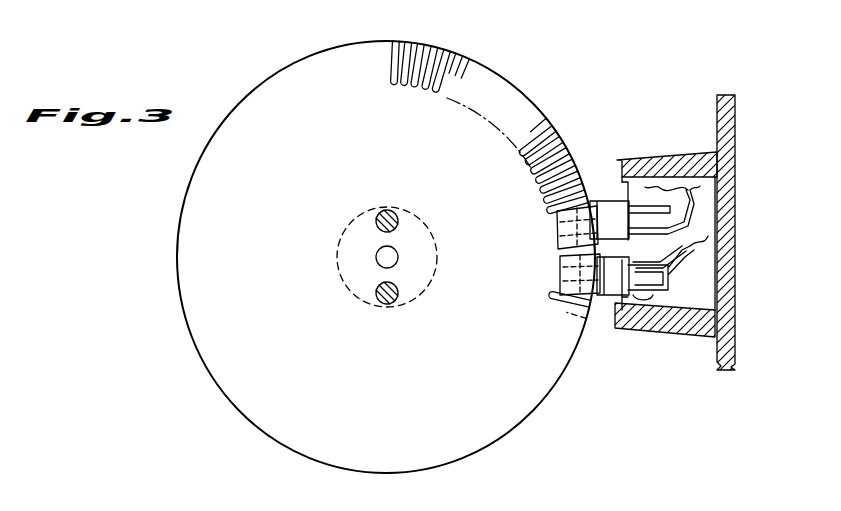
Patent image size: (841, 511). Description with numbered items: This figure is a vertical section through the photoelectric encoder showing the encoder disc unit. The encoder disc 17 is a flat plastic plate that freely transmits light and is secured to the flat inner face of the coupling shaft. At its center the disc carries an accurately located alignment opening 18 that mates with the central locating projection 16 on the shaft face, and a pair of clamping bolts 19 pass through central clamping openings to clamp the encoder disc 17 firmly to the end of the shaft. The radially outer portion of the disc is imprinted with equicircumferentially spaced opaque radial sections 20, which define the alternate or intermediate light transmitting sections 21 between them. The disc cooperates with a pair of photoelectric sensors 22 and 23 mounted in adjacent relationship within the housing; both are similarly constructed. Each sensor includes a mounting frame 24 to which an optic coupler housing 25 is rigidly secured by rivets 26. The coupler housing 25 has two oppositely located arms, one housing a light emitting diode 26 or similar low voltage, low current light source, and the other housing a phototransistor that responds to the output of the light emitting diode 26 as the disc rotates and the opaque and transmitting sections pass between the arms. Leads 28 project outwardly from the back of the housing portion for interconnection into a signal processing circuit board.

The central locating projection 16 is at (376, 256).
The encoder disc 17 is at (318, 178).
The alignment opening 18 is at (398, 261).
The clamping bolts 19 is at (376, 218).
The opaque radial section 20 is at (531, 168).
The light transmitting sections 21 is at (442, 54).
The photoelectric sensor 22 is at (608, 308).
The photoelectric sensor 23 is at (606, 192).
The mounting frame 24 is at (641, 303).
The optic coupler housing 25 is at (615, 262).
The light emitting diode 26 is at (547, 257).
The leads 28 is at (671, 239).